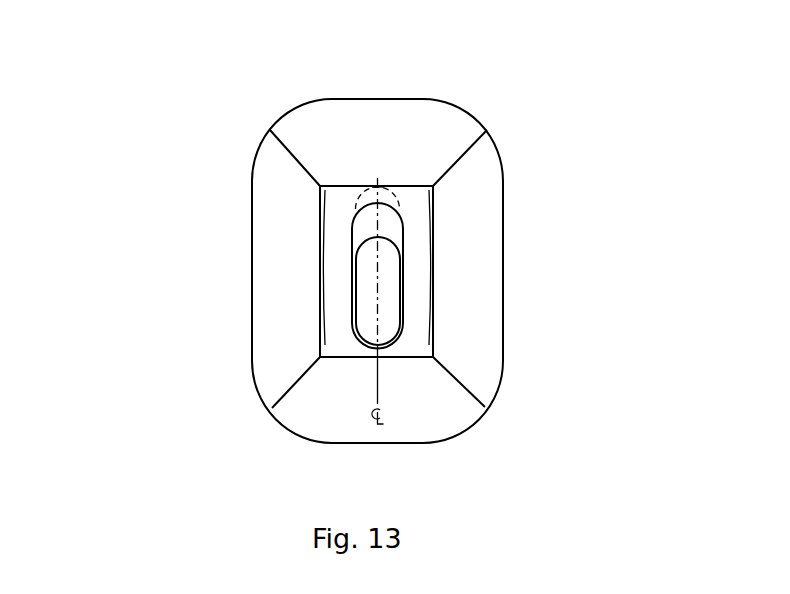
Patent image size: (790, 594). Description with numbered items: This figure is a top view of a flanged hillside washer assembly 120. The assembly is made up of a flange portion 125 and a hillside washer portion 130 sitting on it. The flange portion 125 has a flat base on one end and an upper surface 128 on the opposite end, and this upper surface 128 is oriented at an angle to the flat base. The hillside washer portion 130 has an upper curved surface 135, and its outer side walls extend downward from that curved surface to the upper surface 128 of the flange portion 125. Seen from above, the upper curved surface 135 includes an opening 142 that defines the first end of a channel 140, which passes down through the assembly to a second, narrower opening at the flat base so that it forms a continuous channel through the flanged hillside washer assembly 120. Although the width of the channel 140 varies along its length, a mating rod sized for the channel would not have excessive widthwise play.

The flanged hillside washer assembly 120 is at (545, 158).
The flange portion 125 is at (288, 352).
The upper surface 128 is at (287, 283).
The hillside washer portion 130 is at (331, 213).
The upper curved surface 135 is at (410, 247).
The channel 140 is at (370, 300).
The opening 142 is at (378, 318).